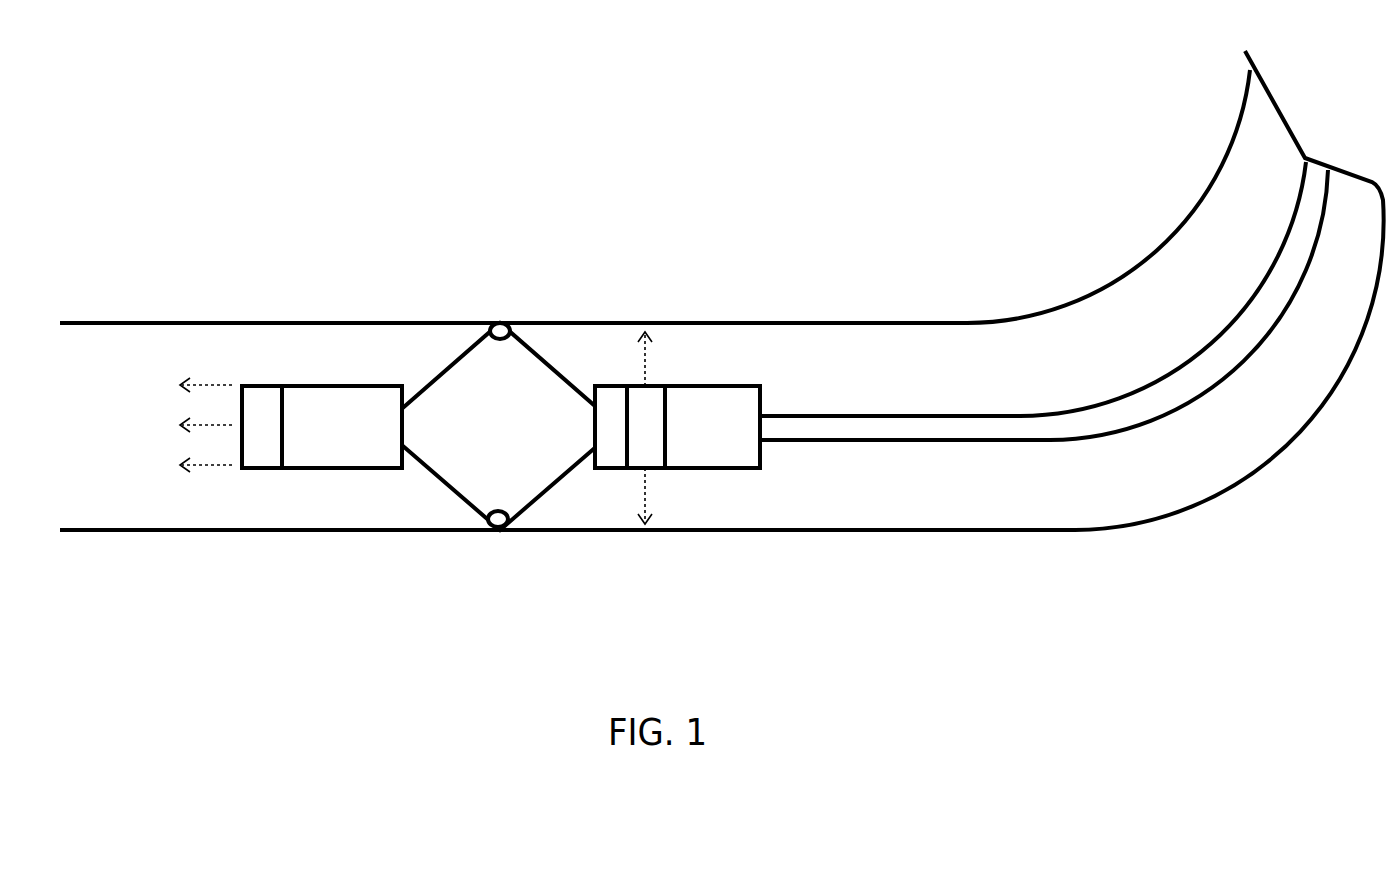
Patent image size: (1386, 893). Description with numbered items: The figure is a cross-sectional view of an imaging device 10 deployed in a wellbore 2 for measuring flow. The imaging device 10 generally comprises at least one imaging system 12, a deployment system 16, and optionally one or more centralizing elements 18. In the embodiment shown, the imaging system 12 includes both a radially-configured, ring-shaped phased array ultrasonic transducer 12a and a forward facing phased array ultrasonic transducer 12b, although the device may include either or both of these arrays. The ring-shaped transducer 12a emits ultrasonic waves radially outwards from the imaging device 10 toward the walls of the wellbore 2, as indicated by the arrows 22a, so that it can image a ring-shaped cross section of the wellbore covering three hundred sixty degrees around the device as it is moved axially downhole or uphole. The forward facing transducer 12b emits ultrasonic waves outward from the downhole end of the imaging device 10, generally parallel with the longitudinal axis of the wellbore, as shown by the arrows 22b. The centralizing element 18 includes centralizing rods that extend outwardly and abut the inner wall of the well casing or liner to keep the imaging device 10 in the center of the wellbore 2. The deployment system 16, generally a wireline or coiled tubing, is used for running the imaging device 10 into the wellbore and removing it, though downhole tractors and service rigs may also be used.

The wellbore 2 is at (850, 532).
The imaging device 10 is at (605, 222).
The imaging system 12 is at (532, 438).
The radially-configured phased array ultrasonic transducer 12a is at (655, 470).
The forward facing phased array ultrasonic transducer 12b is at (270, 468).
The deployment system 16 is at (853, 414).
The centralizing element 18 is at (533, 503).
The arrows 22a is at (647, 358).
The arrows 22b is at (210, 467).